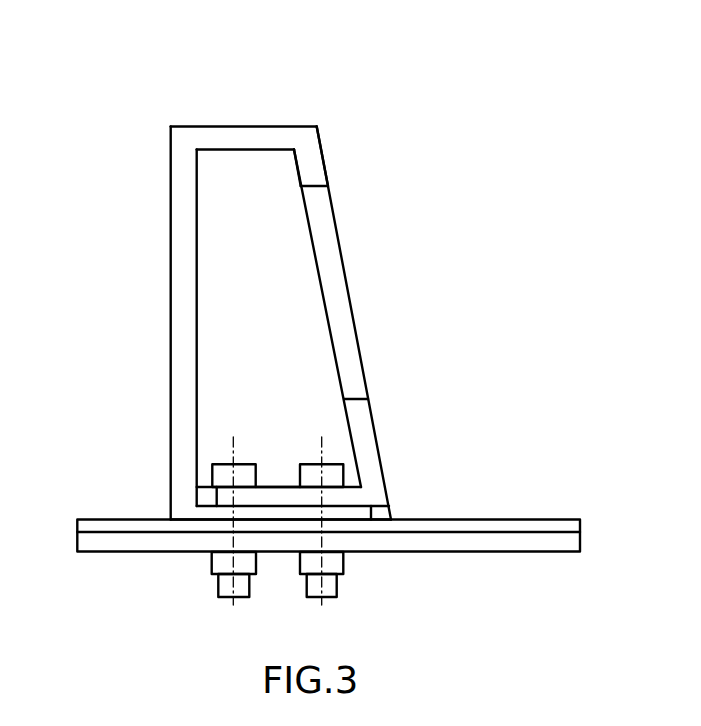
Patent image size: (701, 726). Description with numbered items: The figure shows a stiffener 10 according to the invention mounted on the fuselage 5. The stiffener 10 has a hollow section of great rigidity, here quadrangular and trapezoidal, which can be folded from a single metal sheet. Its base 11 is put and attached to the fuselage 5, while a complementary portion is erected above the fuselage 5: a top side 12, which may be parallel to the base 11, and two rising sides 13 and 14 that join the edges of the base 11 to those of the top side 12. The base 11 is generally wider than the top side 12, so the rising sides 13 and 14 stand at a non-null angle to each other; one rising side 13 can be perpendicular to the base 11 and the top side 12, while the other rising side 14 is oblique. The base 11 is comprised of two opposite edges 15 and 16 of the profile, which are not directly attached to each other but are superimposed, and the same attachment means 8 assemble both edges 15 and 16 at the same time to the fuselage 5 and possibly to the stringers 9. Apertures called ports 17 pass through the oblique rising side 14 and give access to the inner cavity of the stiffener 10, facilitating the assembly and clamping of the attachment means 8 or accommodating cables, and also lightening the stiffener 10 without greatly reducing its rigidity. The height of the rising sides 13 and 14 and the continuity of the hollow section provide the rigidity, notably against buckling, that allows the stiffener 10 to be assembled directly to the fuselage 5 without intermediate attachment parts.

The fuselage 5 is at (549, 545).
The attachment means 8 is at (243, 597).
The stringers 9 is at (552, 527).
The stiffener 10 is at (235, 344).
The base 11 is at (266, 430).
The top side 12 is at (252, 127).
The rising side 13 is at (175, 208).
The rising side 14 is at (318, 159).
The edge 15 is at (297, 497).
The edge 16 is at (347, 512).
The ports 17 is at (342, 285).